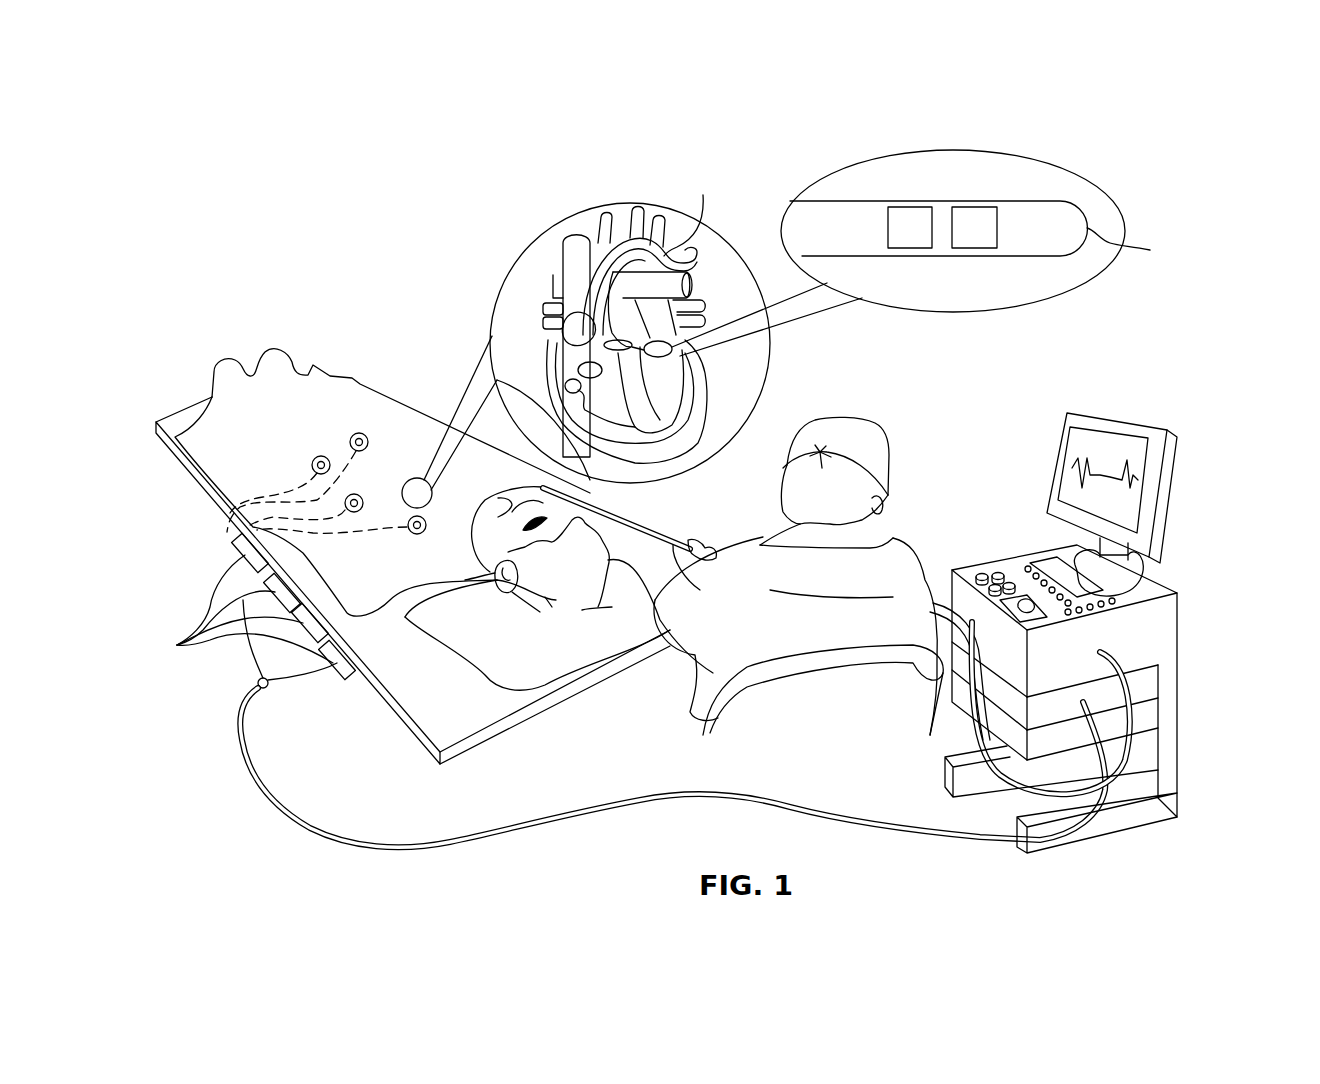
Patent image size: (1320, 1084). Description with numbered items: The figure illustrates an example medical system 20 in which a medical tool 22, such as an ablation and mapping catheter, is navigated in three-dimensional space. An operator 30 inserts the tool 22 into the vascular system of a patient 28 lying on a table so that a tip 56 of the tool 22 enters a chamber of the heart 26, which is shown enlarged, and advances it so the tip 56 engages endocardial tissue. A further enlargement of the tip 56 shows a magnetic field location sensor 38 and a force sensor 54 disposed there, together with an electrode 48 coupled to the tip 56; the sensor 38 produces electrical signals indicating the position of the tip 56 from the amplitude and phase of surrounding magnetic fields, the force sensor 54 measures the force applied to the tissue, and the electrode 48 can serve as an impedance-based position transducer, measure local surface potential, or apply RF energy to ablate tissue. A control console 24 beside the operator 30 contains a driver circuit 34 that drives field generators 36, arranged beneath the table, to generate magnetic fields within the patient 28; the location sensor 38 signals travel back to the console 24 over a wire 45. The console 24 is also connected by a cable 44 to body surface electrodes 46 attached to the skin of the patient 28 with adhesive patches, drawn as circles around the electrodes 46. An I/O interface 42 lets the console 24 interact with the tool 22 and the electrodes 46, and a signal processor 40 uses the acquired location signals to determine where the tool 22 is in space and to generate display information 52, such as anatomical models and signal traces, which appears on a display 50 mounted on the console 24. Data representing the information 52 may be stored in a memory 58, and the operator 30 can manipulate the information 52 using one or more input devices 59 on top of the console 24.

The medical system 20 is at (1057, 363).
The medical tool 22 is at (632, 520).
The control console 24 is at (1107, 610).
The heart 26 is at (695, 413).
The patient 28 is at (547, 607).
The operator 30 is at (893, 558).
The driver circuit 34 is at (1137, 620).
The field generators 36 is at (180, 645).
The magnetic field location sensor 38 is at (908, 206).
The signal processor 40 is at (1143, 686).
The I/O interface 42 is at (1100, 652).
The cable 44 is at (546, 817).
The wire 45 is at (1012, 790).
The body surface electrodes 46 is at (312, 462).
The electrode 48 is at (1137, 246).
The display 50 is at (1150, 465).
The display information 52 is at (1120, 442).
The force sensor 54 is at (970, 206).
The tip 56 is at (672, 347).
The memory 58 is at (1148, 718).
The input devices 59 is at (996, 573).